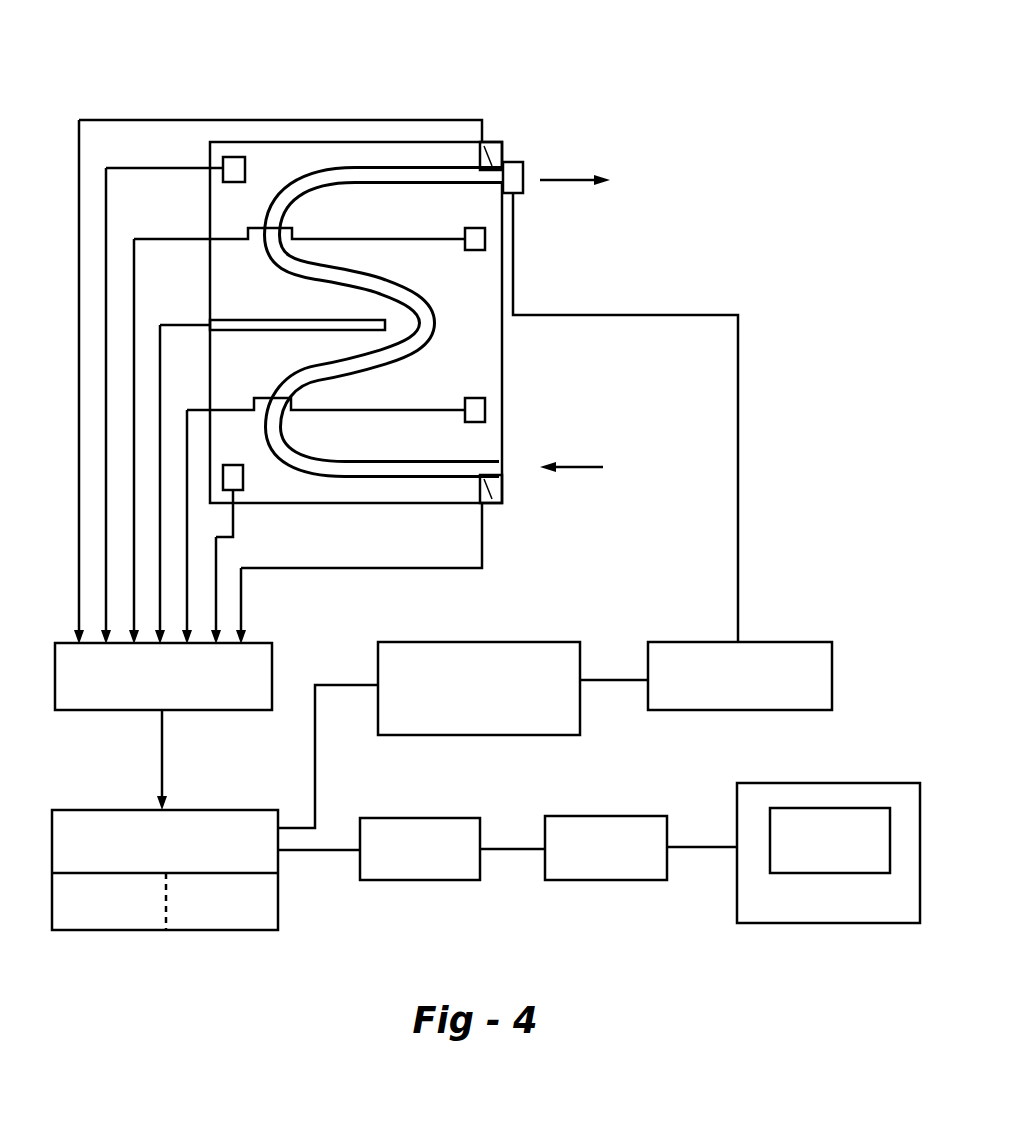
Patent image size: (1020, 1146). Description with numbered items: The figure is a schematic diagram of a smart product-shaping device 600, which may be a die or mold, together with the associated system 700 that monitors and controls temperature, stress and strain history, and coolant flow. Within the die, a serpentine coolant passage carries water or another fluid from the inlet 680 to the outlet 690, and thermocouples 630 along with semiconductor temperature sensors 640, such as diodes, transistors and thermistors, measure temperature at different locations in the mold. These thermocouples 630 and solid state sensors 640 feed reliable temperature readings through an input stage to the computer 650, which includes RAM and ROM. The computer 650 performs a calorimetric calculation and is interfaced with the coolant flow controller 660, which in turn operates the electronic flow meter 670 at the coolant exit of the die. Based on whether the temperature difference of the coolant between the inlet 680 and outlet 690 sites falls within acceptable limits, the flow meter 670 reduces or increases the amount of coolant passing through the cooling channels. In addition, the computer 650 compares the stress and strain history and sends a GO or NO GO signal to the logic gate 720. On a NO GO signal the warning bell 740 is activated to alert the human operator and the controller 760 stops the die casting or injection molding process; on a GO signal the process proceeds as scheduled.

The smart product-shaping device 600 is at (410, 61).
The thermocouples 630 is at (494, 142).
The semiconductor temperature sensors 640 is at (233, 156).
The electronic flow meter 670 is at (513, 162).
The inlet 680 is at (575, 196).
The outlet 690 is at (571, 483).
The system 700 is at (770, 244).
The computer 650 is at (165, 870).
The coolant flow controller 660 is at (740, 676).
The logic gate 720 is at (420, 849).
The warning bell 740 is at (606, 848).
The controller 760 is at (800, 923).